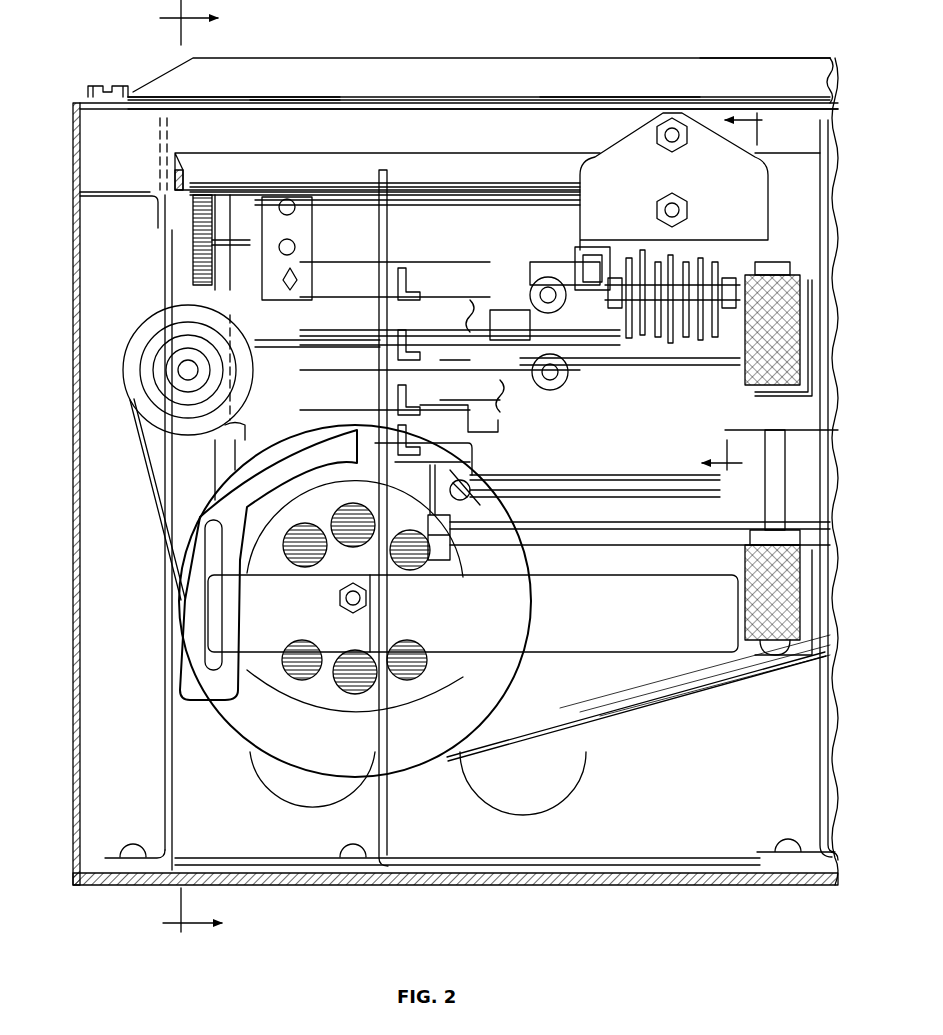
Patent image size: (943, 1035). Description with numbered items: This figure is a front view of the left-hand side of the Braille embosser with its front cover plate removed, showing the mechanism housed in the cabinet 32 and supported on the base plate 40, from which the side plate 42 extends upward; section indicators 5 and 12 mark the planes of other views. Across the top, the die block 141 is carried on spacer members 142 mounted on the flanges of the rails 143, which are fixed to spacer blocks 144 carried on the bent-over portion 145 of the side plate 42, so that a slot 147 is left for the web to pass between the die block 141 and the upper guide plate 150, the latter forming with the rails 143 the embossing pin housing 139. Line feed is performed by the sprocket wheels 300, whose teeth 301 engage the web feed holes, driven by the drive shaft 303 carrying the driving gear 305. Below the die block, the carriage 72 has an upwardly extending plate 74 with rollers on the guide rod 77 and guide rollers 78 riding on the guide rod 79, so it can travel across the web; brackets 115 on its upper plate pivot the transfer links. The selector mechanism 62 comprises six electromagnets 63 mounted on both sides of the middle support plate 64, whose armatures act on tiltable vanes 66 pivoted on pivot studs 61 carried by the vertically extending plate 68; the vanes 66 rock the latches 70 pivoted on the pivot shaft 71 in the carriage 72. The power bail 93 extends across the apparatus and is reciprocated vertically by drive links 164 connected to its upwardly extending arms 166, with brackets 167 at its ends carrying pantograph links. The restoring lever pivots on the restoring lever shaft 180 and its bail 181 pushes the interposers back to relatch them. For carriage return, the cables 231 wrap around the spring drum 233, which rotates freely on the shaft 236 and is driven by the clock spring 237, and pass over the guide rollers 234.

The cabinet 32 is at (80, 634).
The base plate 40 is at (452, 880).
The side plate 42 is at (163, 780).
The pivot stud 61 is at (406, 230).
The selector mechanism 62 is at (747, 399).
The electromagnet 63 is at (765, 372).
The middle support plate 64 is at (822, 750).
The tiltable vane 66 is at (488, 270).
The vertically extending plate 68 is at (388, 825).
The latch 70 is at (675, 380).
The pivot shaft 71 is at (627, 330).
The carriage 72 is at (530, 262).
The upwardly extending plate 74 is at (620, 147).
The guide rod 77 is at (226, 162).
The guide roller 78 is at (545, 322).
The guide rod 79 is at (290, 350).
The power bail 93 is at (333, 407).
The bracket 115 is at (575, 247).
The embossing pin housing 139 is at (430, 124).
The die block 141 is at (325, 60).
The spacer member 142 is at (153, 97).
The rail 143 is at (238, 118).
The spacer block 144 is at (90, 118).
The bent-over portion 145 is at (123, 195).
The slot 147 is at (535, 100).
The upper guide plate 150 is at (637, 103).
The drive link 164 is at (215, 470).
The upwardly extending arm 166 is at (240, 430).
The bracket 167 is at (235, 452).
The restoring lever shaft 180 is at (672, 528).
The bail 181 is at (430, 478).
The cable 231 is at (155, 510).
The spring drum 233 is at (258, 735).
The guide roller 234 is at (145, 325).
The shaft 236 is at (340, 604).
The driving clock spring 237 is at (350, 655).
The sprocket wheel 300 is at (312, 228).
The teeth 301 is at (300, 265).
The drive shaft 303 is at (353, 200).
The driving gear 305 is at (192, 276).
The section line 5- 5 is at (191, 477).
The section line 12- 12 is at (747, 295).